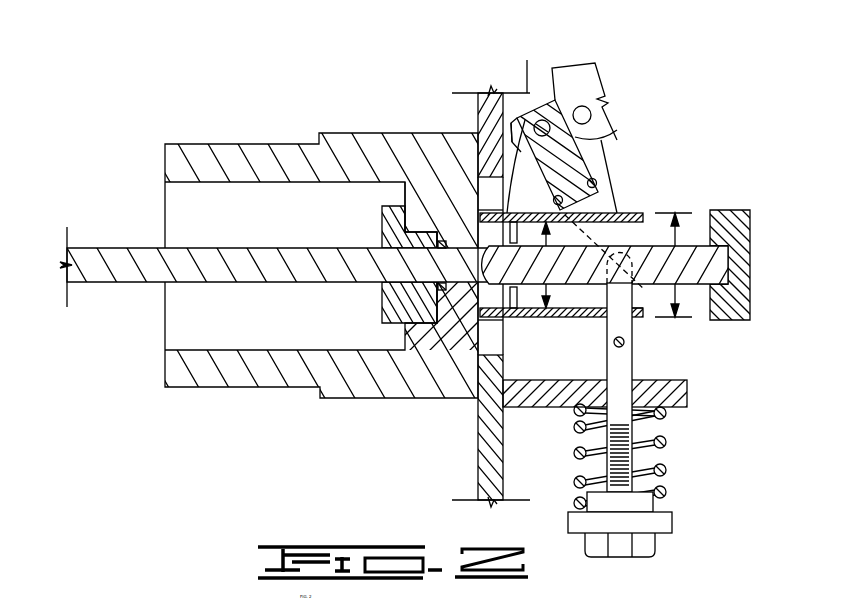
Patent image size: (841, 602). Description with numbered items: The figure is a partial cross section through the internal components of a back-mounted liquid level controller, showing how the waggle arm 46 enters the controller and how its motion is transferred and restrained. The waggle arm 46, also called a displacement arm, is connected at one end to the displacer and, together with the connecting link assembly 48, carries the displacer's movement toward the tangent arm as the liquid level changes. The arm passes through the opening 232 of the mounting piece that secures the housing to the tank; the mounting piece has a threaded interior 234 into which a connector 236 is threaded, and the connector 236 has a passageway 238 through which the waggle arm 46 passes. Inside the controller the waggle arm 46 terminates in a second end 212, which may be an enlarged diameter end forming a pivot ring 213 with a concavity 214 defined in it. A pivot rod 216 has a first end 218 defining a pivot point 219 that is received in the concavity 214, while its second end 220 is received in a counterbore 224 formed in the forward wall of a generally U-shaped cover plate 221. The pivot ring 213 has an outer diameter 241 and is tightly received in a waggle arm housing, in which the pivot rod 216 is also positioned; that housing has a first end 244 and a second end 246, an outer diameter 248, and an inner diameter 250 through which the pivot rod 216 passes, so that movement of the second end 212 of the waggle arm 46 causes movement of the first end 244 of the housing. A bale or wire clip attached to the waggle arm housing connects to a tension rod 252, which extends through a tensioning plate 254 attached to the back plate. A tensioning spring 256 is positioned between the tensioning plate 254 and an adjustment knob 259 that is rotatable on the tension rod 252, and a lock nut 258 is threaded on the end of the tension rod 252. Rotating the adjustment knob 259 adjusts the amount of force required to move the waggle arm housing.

The waggle arm 46 is at (103, 247).
The connecting link assembly 48 is at (590, 167).
The second end 212 is at (470, 177).
The pivot ring 213 is at (492, 225).
The concavity 214 is at (430, 318).
The pivot rod 216 is at (728, 214).
The first end 218 is at (442, 207).
The pivot point 219 is at (470, 245).
The second end 220 is at (750, 250).
The cover plate 221 is at (700, 322).
The counterbore 224 is at (750, 297).
The opening 232 is at (185, 333).
The threaded interior 234 is at (452, 240).
The connector 236 is at (382, 238).
The passageway 238 is at (382, 287).
The outer diameter 241 is at (525, 118).
The first end 244 is at (495, 335).
The second end 246 is at (645, 318).
The outer diameter 248 is at (660, 222).
The inner diameter 250 is at (563, 318).
The tension rod 252 is at (627, 366).
The tensioning plate 254 is at (687, 394).
The tensioning spring 256 is at (666, 455).
The lock nut 258 is at (642, 543).
The adjustment knob 259 is at (645, 503).